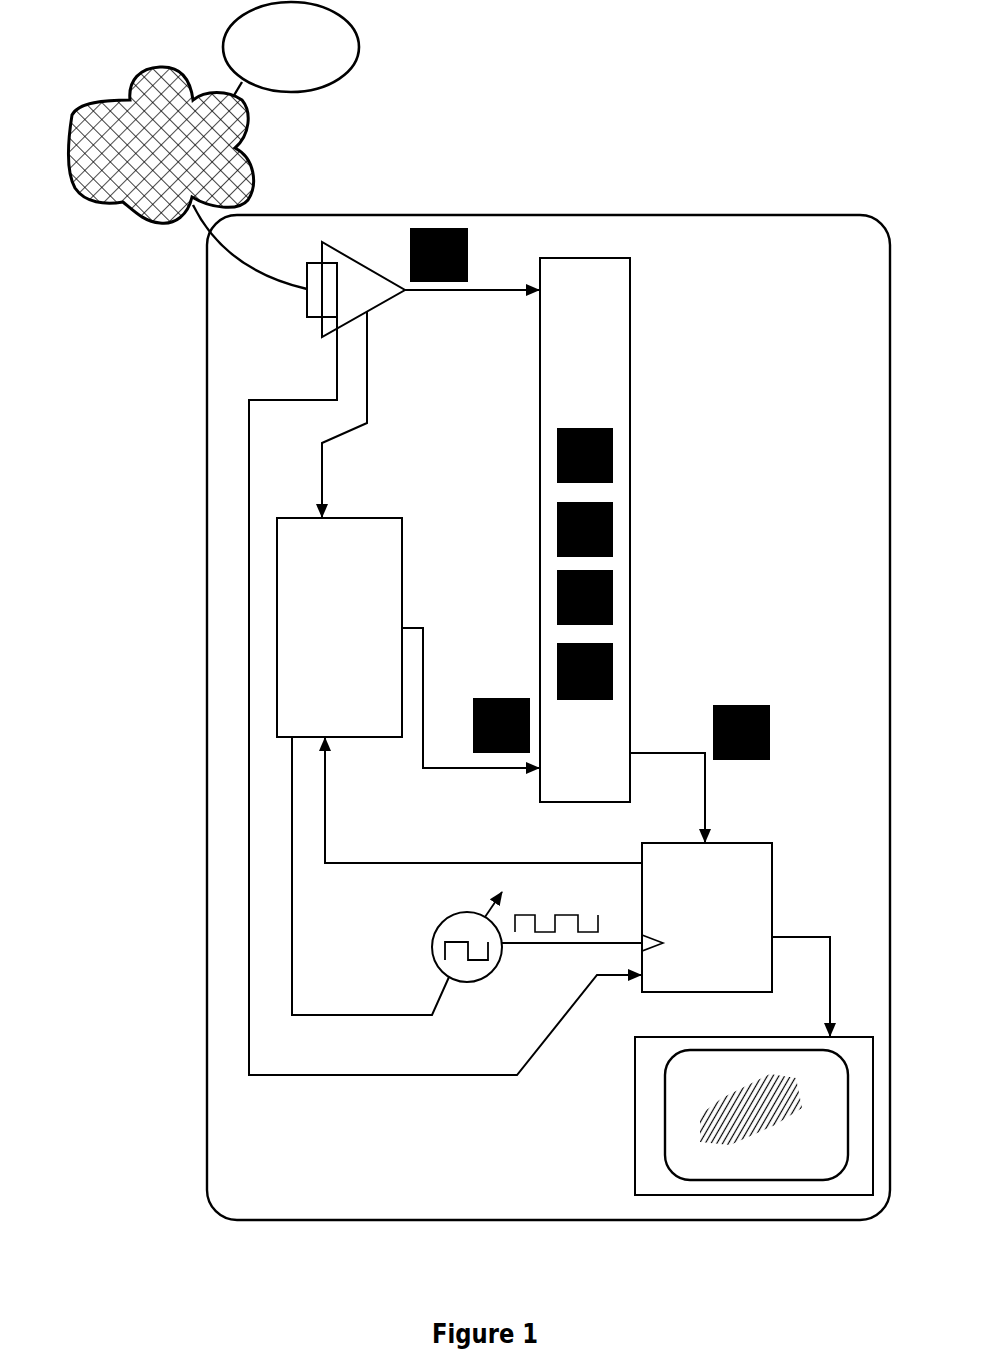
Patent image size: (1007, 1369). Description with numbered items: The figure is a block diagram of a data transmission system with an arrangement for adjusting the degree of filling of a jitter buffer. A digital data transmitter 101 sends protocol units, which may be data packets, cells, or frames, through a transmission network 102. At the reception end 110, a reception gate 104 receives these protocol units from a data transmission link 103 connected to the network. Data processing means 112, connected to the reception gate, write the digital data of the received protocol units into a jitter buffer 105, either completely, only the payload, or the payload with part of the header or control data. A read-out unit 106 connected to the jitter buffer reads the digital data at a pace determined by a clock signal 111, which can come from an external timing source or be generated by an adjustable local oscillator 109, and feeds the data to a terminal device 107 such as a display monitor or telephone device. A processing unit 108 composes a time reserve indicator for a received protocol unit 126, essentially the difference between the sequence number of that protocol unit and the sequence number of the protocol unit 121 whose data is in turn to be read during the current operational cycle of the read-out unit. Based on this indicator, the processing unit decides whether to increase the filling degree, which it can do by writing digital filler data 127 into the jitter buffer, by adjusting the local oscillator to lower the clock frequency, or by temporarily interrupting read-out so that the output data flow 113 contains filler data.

The digital data transmitter 101 is at (355, 60).
The transmission network 102 is at (122, 203).
The data transmission link 103 is at (262, 275).
The reception gate 104 is at (300, 303).
The jitter buffer 105 is at (630, 372).
The read-out unit 106 is at (747, 843).
The terminal device 107 is at (635, 1090).
The processing unit 108 is at (360, 738).
The adjustable local oscillator 109 is at (433, 948).
The reception end 110 is at (498, 213).
The clock signal 111 is at (568, 943).
The data processing means 112 is at (370, 310).
The output data flow 113 is at (793, 937).
The protocol unit 121 is at (770, 723).
The received protocol unit 126 is at (468, 255).
The digital filler data 127 is at (502, 698).